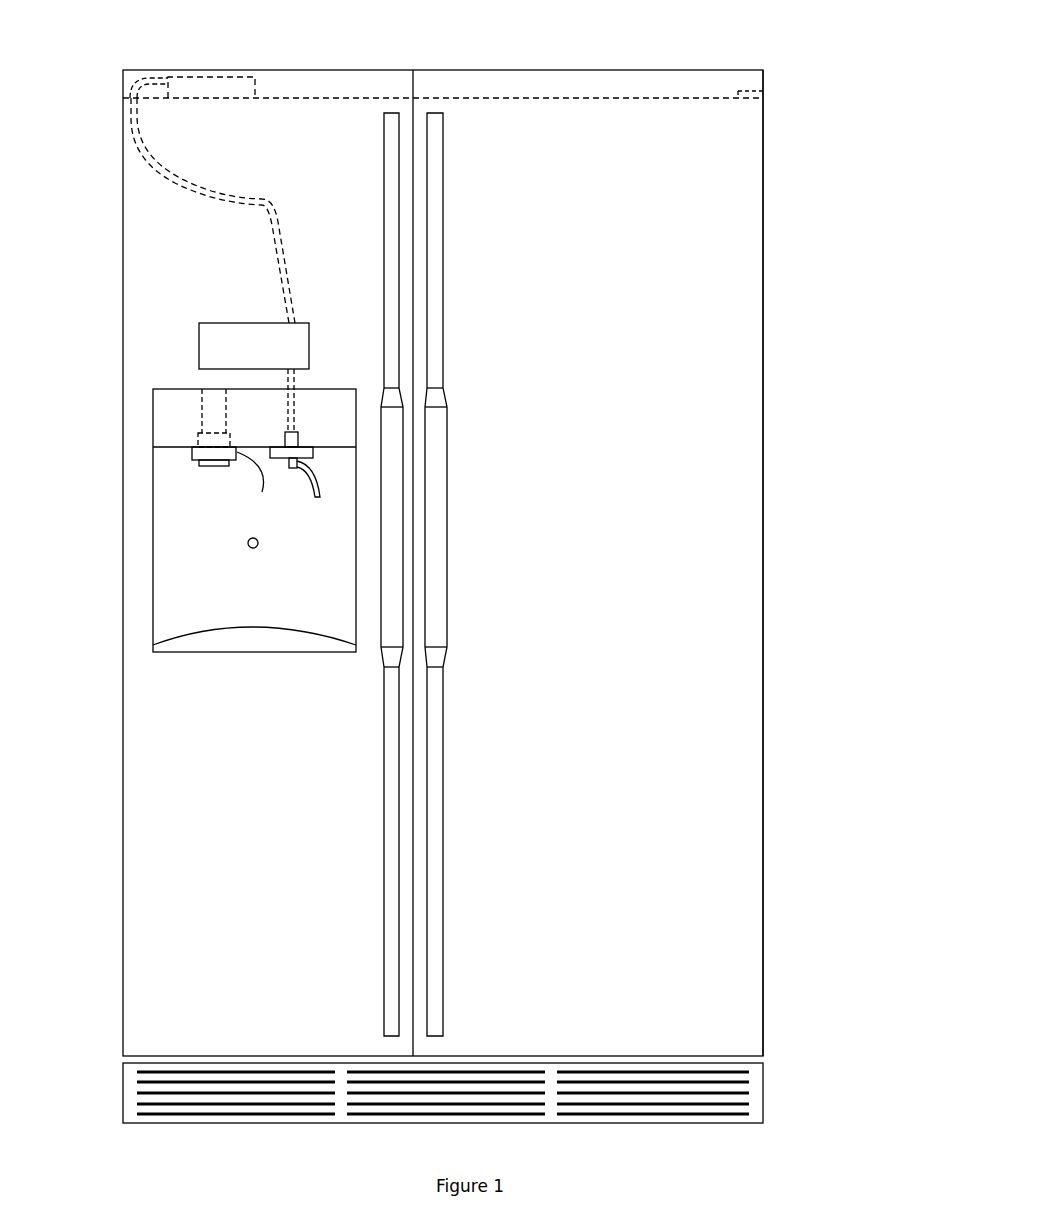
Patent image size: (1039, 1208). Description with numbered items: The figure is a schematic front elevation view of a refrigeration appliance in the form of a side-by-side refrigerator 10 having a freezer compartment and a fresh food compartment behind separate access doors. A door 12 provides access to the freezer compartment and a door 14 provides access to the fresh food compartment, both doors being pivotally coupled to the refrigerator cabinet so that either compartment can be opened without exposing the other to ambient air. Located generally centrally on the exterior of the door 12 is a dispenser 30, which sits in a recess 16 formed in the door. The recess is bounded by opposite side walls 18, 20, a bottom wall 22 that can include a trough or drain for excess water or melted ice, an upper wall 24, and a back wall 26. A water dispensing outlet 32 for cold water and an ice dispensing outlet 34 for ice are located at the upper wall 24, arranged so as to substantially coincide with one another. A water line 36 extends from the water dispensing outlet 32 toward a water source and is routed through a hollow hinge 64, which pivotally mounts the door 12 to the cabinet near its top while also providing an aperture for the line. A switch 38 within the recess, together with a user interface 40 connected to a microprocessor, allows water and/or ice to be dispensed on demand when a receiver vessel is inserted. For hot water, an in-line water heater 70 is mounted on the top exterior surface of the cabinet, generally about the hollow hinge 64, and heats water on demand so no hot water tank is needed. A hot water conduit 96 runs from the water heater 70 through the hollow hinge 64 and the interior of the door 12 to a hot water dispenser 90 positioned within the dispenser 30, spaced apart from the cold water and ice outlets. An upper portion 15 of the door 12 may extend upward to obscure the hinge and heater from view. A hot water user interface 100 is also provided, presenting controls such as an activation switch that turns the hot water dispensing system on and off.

The refrigerator 10 is at (802, 185).
The door 12 is at (210, 766).
The door 14 is at (682, 657).
The upper portion of the refrigerator door 15 is at (325, 80).
The recess 16 is at (178, 522).
The side wall 18 is at (157, 604).
The side wall 20 is at (343, 590).
The bottom wall 22 is at (228, 637).
The upper wall 24 is at (172, 458).
The back wall 26 is at (310, 548).
The dispenser 30 is at (201, 468).
The water dispensing outlet 32 is at (200, 466).
The ice dispensing outlet 34 is at (255, 483).
The water line 36 is at (200, 402).
The switch 38 is at (258, 547).
The user interface 40 is at (175, 413).
The hollow hinge 64 is at (133, 92).
The water heater 70 is at (210, 77).
The hot water dispenser 90 is at (313, 460).
The hot water conduit 96 is at (288, 292).
The hot water user interface 100 is at (255, 323).